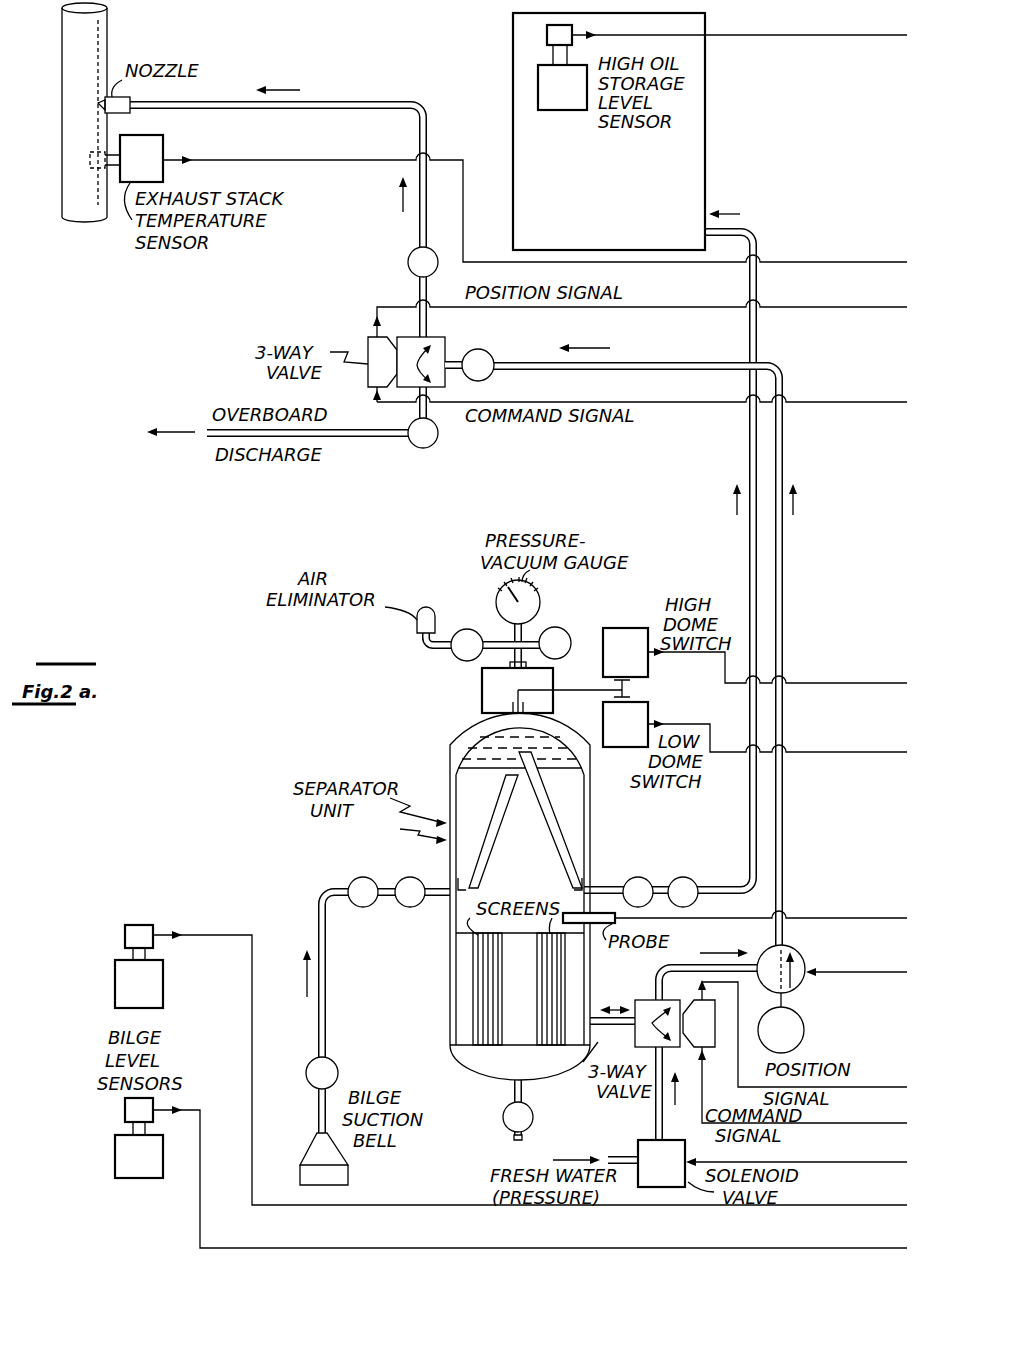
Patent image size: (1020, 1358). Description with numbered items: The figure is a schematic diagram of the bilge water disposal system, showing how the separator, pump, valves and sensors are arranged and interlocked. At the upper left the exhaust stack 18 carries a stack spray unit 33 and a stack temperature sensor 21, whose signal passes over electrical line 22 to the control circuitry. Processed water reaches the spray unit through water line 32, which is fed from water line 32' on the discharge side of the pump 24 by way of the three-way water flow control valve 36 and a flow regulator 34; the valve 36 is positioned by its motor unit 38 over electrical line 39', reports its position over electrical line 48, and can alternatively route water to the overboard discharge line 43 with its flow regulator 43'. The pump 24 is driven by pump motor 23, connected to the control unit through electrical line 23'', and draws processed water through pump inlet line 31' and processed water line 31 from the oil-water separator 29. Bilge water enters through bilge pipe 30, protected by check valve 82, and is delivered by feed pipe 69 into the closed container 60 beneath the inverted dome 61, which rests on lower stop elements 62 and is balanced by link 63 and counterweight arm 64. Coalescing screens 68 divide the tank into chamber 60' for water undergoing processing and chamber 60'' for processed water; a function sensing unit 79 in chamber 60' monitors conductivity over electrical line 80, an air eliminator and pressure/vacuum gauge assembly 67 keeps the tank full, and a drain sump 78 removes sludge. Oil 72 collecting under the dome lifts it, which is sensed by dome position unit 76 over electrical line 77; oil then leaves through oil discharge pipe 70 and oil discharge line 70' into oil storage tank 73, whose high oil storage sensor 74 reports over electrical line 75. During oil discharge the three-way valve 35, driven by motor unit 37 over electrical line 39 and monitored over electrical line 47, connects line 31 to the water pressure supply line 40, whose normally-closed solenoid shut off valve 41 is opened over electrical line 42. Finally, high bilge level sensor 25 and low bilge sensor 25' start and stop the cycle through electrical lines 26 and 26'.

The stack 18 is at (68, 53).
The stack temperature sensor 21 is at (92, 172).
The electrical line 22 is at (293, 160).
The pump motor 23 is at (802, 1023).
The electrical line 23'' is at (856, 954).
The pump 24 is at (800, 988).
The high bilge level sensor 25 is at (111, 966).
The low bilge sensor 25' is at (109, 1138).
The electrical line 26 is at (530, 1068).
The electrical line 26' is at (530, 1164).
The oil-water separator 29 is at (408, 832).
The bilge pipe 30 is at (322, 972).
The processed water line 31 is at (612, 1030).
The pump inlet line 31' is at (708, 964).
The water line 32 is at (276, 241).
The water line 32' is at (660, 640).
The stack spray unit 33 is at (132, 113).
The flow regulator 34 is at (418, 260).
The water flow control valve 35 is at (652, 999).
The water flow control valve 36 is at (446, 342).
The motor unit 37 is at (712, 1048).
The motor unit 38 is at (378, 348).
The electrical line 39 is at (789, 1087).
The electrical line 39' is at (642, 384).
The water pressure supply line 40 is at (397, 403).
The solenoid shut off valve 41 is at (638, 1143).
The electrical line 42 is at (885, 1162).
The overboard discharge line 43 is at (278, 449).
The flow regulator 43' is at (444, 444).
The electrical line 47 is at (894, 1087).
The electrical line 48 is at (393, 305).
The closed container 60 is at (535, 896).
The chamber 60' is at (520, 891).
The chamber 60'' is at (520, 989).
The inverted dome 61 is at (589, 803).
The lower stop elements 62 is at (453, 884).
The link 63 is at (553, 690).
The counterweight arm 64 is at (533, 690).
The air eliminator and pressure/vacuum gauge assembly 67 is at (494, 612).
The coalescing screens 68 is at (490, 980).
The feed pipe 69 is at (502, 822).
The oil discharge pipe 70 is at (550, 820).
The oil discharge line 70' is at (691, 555).
The oil 72 is at (483, 755).
The oil storage tank 73 is at (700, 122).
The high oil storage sensor 74 is at (552, 108).
The electrical line 75 is at (878, 35).
The dome position sensing unit 76 is at (626, 634).
The electrical line 77 is at (863, 683).
The drain sump 78 is at (512, 1136).
The function sensing unit 79 is at (568, 912).
The electrical line 80 is at (860, 912).
The check valve 82 is at (312, 1063).